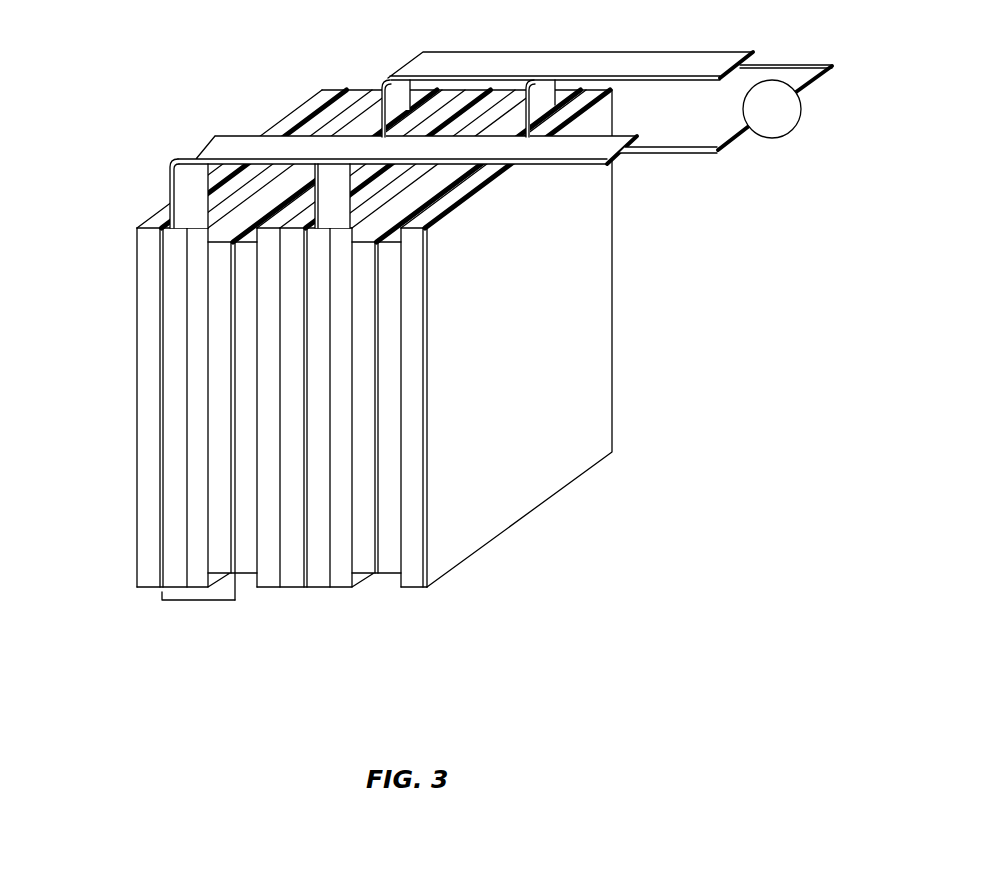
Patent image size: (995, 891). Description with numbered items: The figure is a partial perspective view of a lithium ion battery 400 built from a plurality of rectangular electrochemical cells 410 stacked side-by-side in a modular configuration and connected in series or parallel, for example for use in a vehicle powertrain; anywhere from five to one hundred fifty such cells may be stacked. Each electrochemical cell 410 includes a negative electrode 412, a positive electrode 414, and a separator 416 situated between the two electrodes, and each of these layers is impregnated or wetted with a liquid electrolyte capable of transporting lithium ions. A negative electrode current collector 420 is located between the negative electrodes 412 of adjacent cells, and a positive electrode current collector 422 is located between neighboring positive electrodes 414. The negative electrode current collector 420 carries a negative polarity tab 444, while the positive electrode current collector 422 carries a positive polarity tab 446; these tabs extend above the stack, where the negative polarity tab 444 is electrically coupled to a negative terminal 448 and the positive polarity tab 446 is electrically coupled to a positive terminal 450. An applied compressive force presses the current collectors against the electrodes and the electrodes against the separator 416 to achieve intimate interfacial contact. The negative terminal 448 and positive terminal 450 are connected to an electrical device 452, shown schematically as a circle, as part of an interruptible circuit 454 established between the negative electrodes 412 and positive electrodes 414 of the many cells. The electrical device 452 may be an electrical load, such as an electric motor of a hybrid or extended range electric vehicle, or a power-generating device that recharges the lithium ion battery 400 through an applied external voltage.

The lithium ion battery 400 is at (451, 375).
The electrochemical cell 410 is at (196, 603).
The negative electrode 412 is at (175, 505).
The positive electrode 414 is at (247, 311).
The separator 416 is at (193, 462).
The negative electrode current collector 420 is at (162, 362).
The positive electrode current collector 422 is at (232, 340).
The negative polarity tab 444 is at (165, 197).
The positive polarity tab 446 is at (383, 112).
The negative terminal 448 is at (581, 164).
The positive terminal 450 is at (632, 80).
The electrical device 452 is at (776, 113).
The interruptible circuit 454 is at (727, 160).